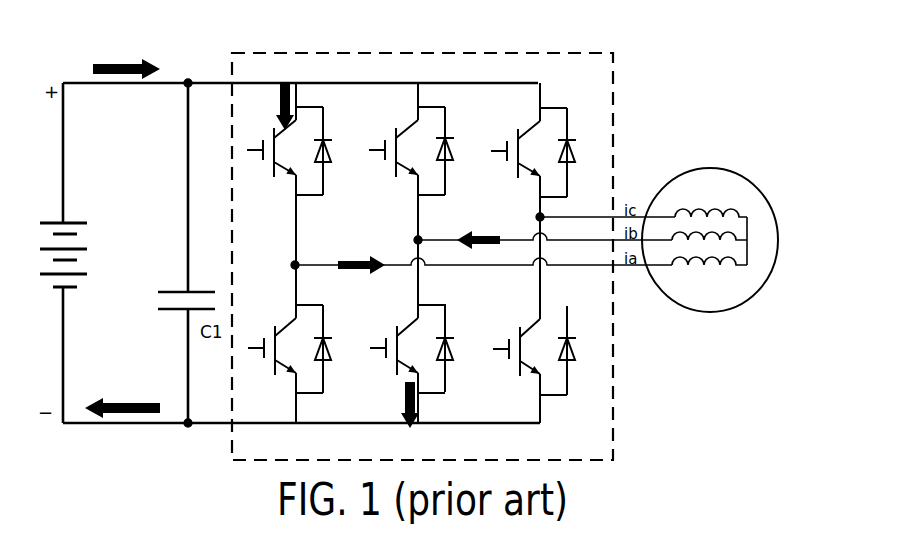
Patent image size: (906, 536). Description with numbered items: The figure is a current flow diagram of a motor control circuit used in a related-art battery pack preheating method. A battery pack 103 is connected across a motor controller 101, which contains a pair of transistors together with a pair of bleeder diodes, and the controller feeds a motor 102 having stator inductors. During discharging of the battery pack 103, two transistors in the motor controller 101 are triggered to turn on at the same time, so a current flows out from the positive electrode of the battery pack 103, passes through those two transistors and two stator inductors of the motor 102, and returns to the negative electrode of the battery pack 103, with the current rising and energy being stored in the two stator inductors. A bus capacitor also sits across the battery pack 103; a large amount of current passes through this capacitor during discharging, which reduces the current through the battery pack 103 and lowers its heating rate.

The motor controller 101 is at (420, 53).
The motor 102 is at (707, 167).
The battery pack 103 is at (80, 215).